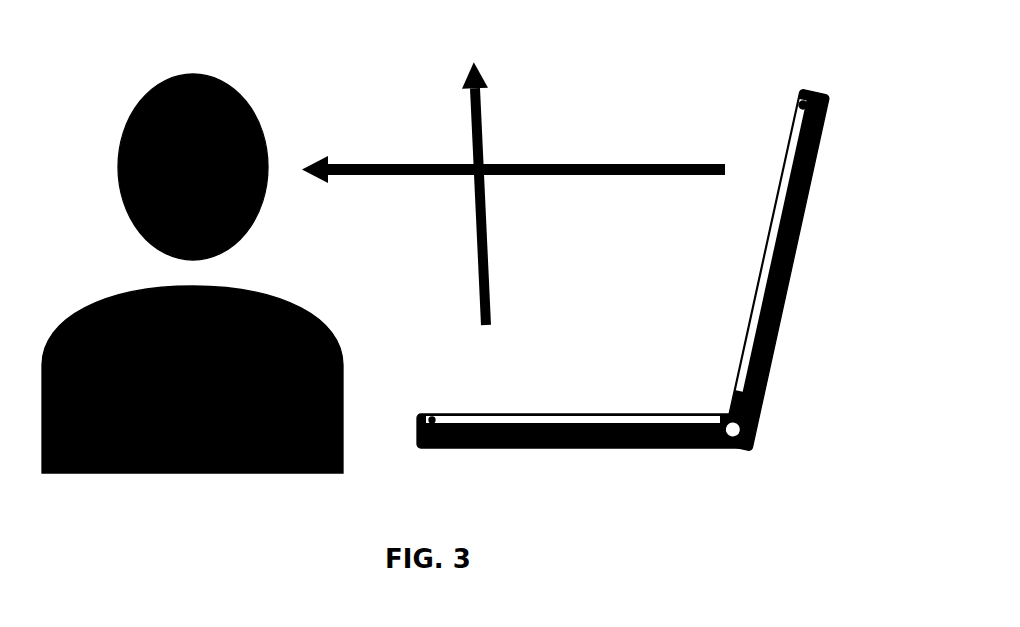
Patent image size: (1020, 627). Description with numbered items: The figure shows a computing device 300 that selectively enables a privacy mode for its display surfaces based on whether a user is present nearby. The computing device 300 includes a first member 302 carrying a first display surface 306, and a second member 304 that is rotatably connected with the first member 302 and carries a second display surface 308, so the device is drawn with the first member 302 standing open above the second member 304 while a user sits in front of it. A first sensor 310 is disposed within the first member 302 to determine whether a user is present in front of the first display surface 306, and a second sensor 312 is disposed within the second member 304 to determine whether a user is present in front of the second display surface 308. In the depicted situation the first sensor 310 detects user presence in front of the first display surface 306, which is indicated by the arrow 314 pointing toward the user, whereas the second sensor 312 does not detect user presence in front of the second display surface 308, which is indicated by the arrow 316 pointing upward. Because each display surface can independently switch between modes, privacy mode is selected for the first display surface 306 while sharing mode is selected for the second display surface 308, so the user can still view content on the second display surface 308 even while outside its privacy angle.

The computing device 300 is at (651, 259).
The first member 302 is at (800, 245).
The second member 304 is at (537, 450).
The first display surface 306 is at (755, 267).
The second display surface 308 is at (588, 415).
The first sensor 310 is at (799, 104).
The second sensor 312 is at (432, 420).
The arrow 314 is at (603, 175).
The arrow 316 is at (483, 243).